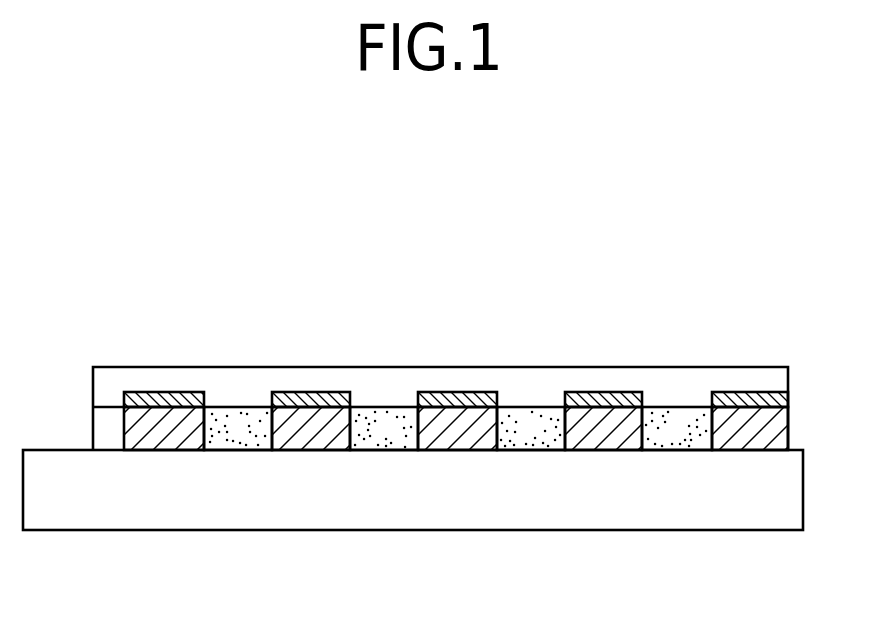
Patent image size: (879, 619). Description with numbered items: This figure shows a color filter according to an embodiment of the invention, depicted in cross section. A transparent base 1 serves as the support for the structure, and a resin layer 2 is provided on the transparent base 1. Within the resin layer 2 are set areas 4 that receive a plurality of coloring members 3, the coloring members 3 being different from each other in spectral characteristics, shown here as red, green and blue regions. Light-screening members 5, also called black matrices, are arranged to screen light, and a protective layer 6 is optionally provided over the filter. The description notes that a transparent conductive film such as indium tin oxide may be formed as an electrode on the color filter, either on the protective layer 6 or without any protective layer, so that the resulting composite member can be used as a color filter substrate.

The transparent base 1 is at (770, 487).
The resin layer 2 is at (772, 428).
The coloring members 3 is at (692, 420).
The set areas 4 is at (468, 556).
The light-screening members 5 is at (790, 395).
The protective layer 6 is at (651, 398).